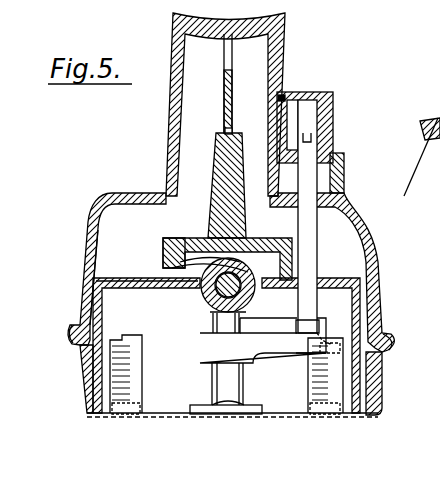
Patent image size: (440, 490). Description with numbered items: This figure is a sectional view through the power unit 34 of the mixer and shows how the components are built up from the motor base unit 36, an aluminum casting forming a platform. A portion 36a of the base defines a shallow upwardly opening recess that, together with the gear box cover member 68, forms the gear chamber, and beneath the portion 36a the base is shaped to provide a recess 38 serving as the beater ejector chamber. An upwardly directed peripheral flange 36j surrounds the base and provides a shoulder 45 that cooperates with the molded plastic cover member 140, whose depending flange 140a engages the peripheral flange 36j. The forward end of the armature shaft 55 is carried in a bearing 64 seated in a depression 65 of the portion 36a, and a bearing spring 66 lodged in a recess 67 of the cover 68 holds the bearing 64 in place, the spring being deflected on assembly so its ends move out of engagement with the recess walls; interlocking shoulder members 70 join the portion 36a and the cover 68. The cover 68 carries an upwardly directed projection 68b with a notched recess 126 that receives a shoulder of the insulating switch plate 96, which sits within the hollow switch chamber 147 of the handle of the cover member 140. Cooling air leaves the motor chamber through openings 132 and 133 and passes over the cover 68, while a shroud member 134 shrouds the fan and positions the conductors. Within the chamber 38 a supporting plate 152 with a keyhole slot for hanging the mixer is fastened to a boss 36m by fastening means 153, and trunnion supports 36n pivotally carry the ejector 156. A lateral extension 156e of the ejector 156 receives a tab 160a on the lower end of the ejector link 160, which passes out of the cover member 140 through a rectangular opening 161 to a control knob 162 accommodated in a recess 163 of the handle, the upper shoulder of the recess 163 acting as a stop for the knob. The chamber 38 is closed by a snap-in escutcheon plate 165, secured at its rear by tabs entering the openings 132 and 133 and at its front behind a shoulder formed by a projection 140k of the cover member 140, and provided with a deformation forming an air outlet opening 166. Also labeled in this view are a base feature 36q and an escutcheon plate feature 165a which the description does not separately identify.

The switch chamber 147 is at (175, 45).
The cover member 140 is at (136, 189).
The depending flange 140a is at (85, 273).
The projection 140k is at (425, 179).
The motor base unit 36 is at (375, 379).
The portion 36a is at (120, 278).
The peripheral flange 36j is at (82, 390).
The boss 36m is at (233, 383).
The base portion 36q is at (427, 246).
The trunnion supports 36n is at (439, 298).
The recess 38 is at (134, 306).
The shoulder 45 is at (78, 325).
The armature shaft 55 is at (216, 296).
The bearing 64 is at (205, 291).
The depression 65 is at (205, 314).
The bearing spring 66 is at (197, 241).
The recess 67 is at (267, 270).
The gear box cover member 68 is at (167, 240).
The projection 68b is at (214, 143).
The interlocking shoulder members 70 is at (439, 226).
The insulating plate 96 is at (223, 80).
The notched recess 126 is at (233, 133).
The opening 132 is at (130, 363).
The opening 133 is at (312, 388).
The shroud member 134 is at (140, 326).
The supporting plate 152 is at (263, 417).
The fastening means 153 is at (232, 418).
The ejector 156 is at (244, 356).
The lateral integral extension 156e is at (276, 331).
The ejector link 160 is at (298, 228).
The tab 160a is at (331, 342).
The opening 161 is at (344, 172).
The control knob 162 is at (332, 97).
The recess 163 is at (282, 99).
The escutcheon plate 165 is at (158, 419).
The base pad 165a is at (150, 400).
The air outlet opening 166 is at (420, 196).
The power unit 34 is at (211, 437).